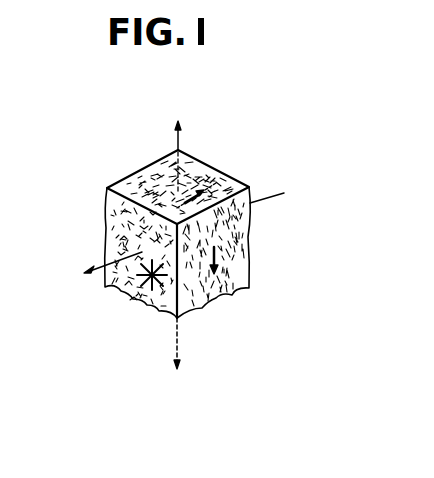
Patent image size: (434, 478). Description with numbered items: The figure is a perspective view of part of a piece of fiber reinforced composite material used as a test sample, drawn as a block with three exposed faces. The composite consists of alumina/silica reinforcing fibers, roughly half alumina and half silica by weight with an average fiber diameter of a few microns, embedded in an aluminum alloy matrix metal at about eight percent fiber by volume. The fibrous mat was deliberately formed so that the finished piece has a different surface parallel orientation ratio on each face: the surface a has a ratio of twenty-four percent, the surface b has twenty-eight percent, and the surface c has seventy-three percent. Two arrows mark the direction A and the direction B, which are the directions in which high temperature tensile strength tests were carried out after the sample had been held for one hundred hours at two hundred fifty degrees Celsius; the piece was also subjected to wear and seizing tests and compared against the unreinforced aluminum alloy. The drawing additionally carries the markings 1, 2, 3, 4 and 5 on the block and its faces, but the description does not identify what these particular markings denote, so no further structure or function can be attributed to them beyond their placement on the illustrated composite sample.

The block body 1 is at (113, 215).
The top face 2 is at (138, 181).
The direction arrow on top face 3 is at (190, 199).
The direction arrow on side face 4 is at (216, 261).
The star mark (randomly oriented region) 5 is at (146, 287).
The surface a is at (188, 162).
The surface b is at (213, 263).
The surface c is at (142, 272).
The direction A is at (178, 245).
The direction B is at (181, 233).